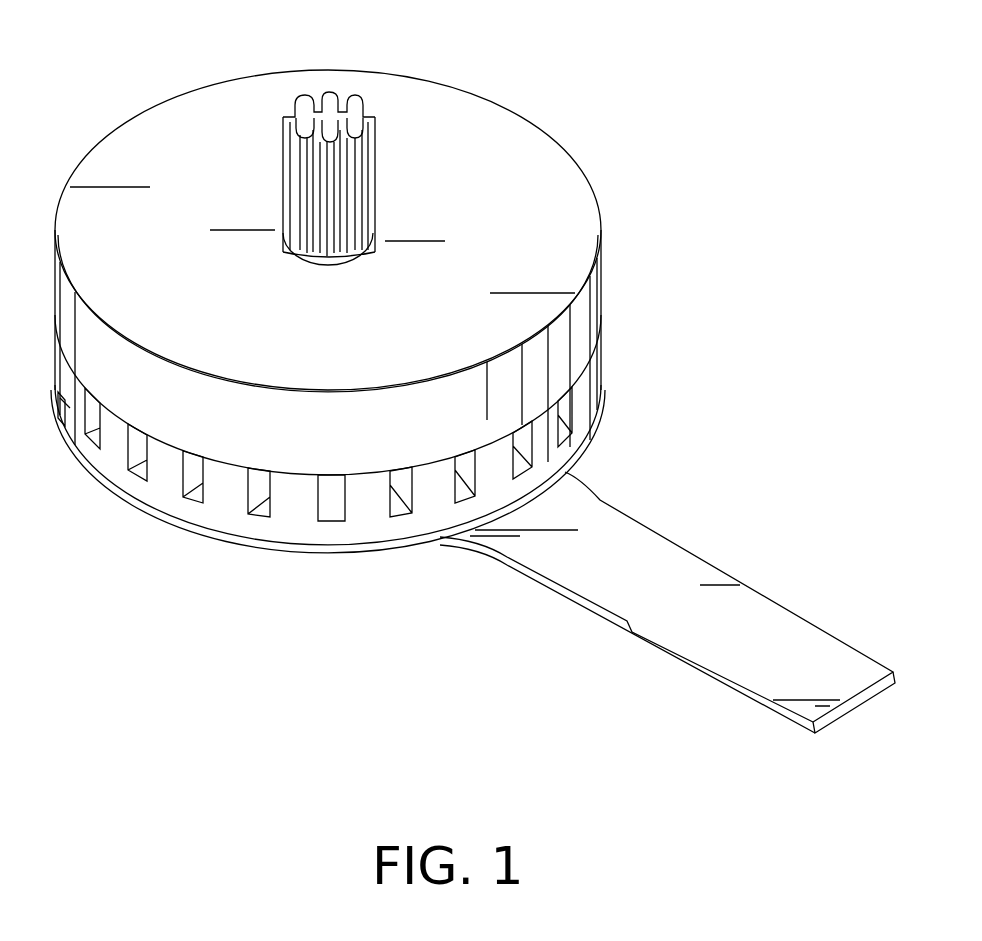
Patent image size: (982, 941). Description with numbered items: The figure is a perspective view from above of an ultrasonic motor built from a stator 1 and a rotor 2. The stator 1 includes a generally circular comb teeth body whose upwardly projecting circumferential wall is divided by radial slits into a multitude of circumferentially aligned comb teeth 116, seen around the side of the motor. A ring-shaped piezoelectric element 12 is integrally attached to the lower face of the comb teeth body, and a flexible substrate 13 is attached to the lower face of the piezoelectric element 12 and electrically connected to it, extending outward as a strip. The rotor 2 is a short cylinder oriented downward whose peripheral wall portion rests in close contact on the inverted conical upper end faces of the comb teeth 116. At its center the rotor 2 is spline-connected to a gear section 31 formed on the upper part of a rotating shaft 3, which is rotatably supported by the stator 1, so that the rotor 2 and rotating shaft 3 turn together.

The stator 1 is at (620, 402).
The rotor 2 is at (567, 212).
The rotating shaft 3 is at (374, 162).
The gear section 31 is at (328, 93).
The piezoelectric element 12 is at (323, 549).
The comb teeth 116 is at (225, 483).
The flexible substrate 13 is at (664, 562).